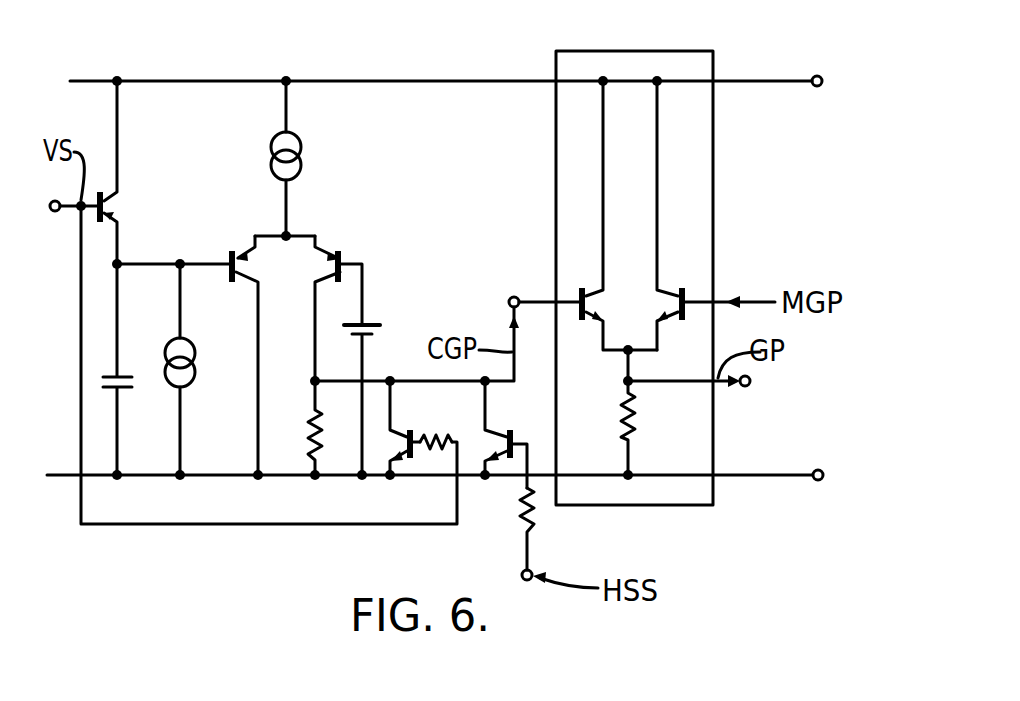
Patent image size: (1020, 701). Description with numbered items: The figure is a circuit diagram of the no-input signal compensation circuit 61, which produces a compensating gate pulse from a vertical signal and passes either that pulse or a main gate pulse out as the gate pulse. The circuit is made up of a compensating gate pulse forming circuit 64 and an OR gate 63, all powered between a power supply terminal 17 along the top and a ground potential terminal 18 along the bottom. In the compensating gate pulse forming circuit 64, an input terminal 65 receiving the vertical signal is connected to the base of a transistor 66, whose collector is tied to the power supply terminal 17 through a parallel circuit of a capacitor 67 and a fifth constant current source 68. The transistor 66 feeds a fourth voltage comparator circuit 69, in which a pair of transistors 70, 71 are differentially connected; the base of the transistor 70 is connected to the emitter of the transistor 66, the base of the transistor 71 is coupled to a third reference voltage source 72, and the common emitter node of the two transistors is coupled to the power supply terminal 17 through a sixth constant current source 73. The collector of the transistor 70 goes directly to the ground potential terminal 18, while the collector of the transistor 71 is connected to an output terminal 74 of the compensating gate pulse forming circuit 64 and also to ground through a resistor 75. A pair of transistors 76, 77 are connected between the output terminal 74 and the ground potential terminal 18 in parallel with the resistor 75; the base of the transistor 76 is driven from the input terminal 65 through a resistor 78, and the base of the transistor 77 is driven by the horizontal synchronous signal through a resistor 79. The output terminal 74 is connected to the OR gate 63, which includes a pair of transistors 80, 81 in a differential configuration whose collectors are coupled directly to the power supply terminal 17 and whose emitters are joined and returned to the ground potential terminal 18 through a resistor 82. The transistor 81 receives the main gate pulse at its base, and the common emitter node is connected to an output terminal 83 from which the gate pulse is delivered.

The power supply terminal 17 is at (817, 76).
The ground potential terminal 18 is at (816, 481).
The no-input signal compensation circuit 61 is at (402, 81).
The OR gate 63 is at (635, 51).
The compensating gate pulse forming circuit 64 is at (394, 141).
The input terminal 65 is at (54, 213).
The transistor 66 is at (104, 208).
The capacitor 67 is at (122, 393).
The fifth constant current source 68 is at (197, 370).
The fourth voltage comparator circuit 69 is at (270, 299).
The transistor 70 is at (230, 256).
The transistor 71 is at (341, 256).
The third reference voltage source 72 is at (372, 325).
The sixth constant current source 73 is at (273, 142).
The output terminal 74 is at (511, 298).
The resistor 75 is at (310, 420).
The transistor 76 is at (400, 446).
The transistor 77 is at (513, 432).
The resistor 78 is at (433, 432).
The resistor 79 is at (518, 500).
The transistor 80 is at (580, 292).
The transistor 81 is at (686, 292).
The resistor 82 is at (634, 412).
The output terminal 83 is at (750, 384).